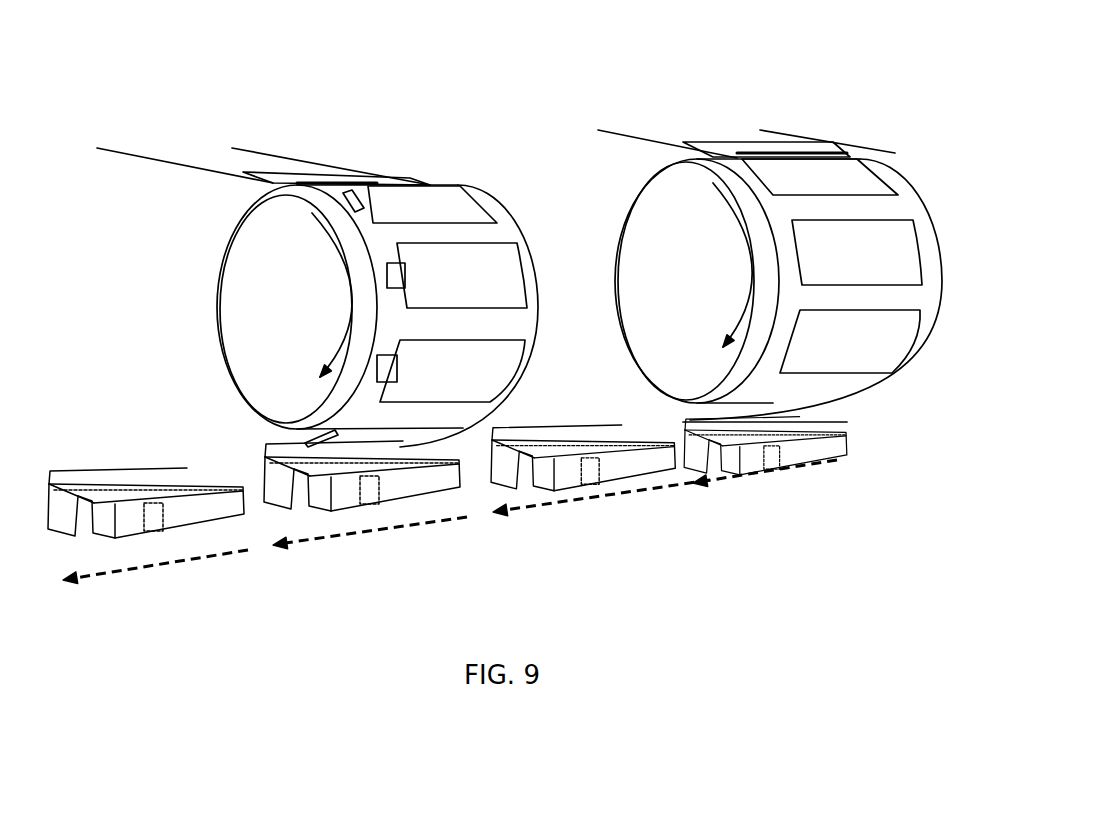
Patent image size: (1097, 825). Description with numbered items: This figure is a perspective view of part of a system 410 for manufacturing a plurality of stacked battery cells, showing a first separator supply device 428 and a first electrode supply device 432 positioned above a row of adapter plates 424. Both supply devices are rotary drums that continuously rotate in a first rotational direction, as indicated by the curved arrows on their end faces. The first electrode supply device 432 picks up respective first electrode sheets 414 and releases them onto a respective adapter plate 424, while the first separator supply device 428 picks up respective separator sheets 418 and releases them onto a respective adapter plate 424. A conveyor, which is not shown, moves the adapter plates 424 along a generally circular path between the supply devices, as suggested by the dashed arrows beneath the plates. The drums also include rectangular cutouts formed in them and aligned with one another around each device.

The system 410 is at (590, 80).
The first electrode sheets 414 is at (483, 273).
The separator sheets 418 is at (897, 265).
The adapter plates 424 is at (236, 520).
The first separator supply device 428 is at (742, 276).
The first electrode supply device 432 is at (354, 297).